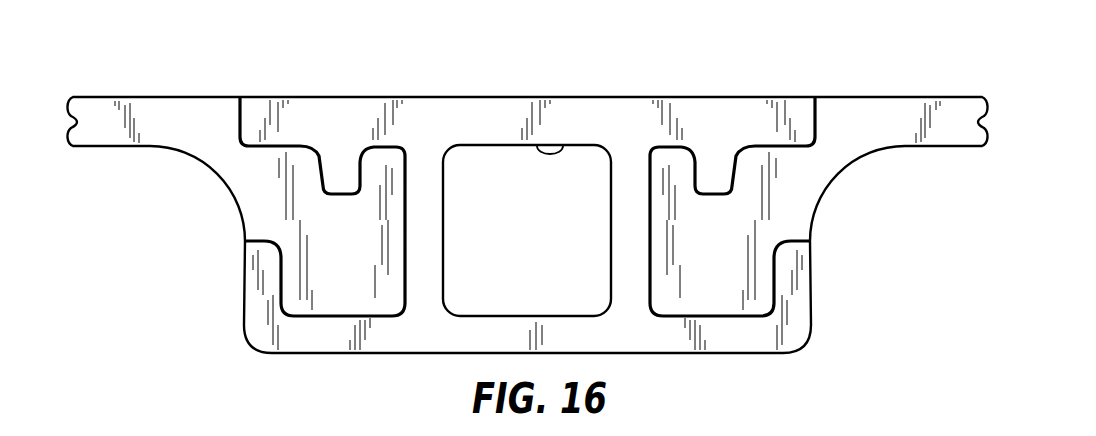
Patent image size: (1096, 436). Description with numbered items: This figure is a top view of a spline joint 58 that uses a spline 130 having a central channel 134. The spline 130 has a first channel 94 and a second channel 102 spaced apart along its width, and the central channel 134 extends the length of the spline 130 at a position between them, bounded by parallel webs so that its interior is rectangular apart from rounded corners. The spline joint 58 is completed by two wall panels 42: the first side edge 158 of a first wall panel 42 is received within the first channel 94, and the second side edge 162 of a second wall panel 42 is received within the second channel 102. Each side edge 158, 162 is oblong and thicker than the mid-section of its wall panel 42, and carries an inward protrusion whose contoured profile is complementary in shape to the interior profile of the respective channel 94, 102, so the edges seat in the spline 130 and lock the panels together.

The wall panel 42 is at (92, 113).
The spline joint 58 is at (460, 78).
The central channel 134 is at (560, 145).
The first side edge 158 is at (182, 190).
The second side edge 162 is at (857, 210).
The first channel 94 is at (288, 305).
The second channel 102 is at (762, 308).
The spline 130 is at (392, 335).